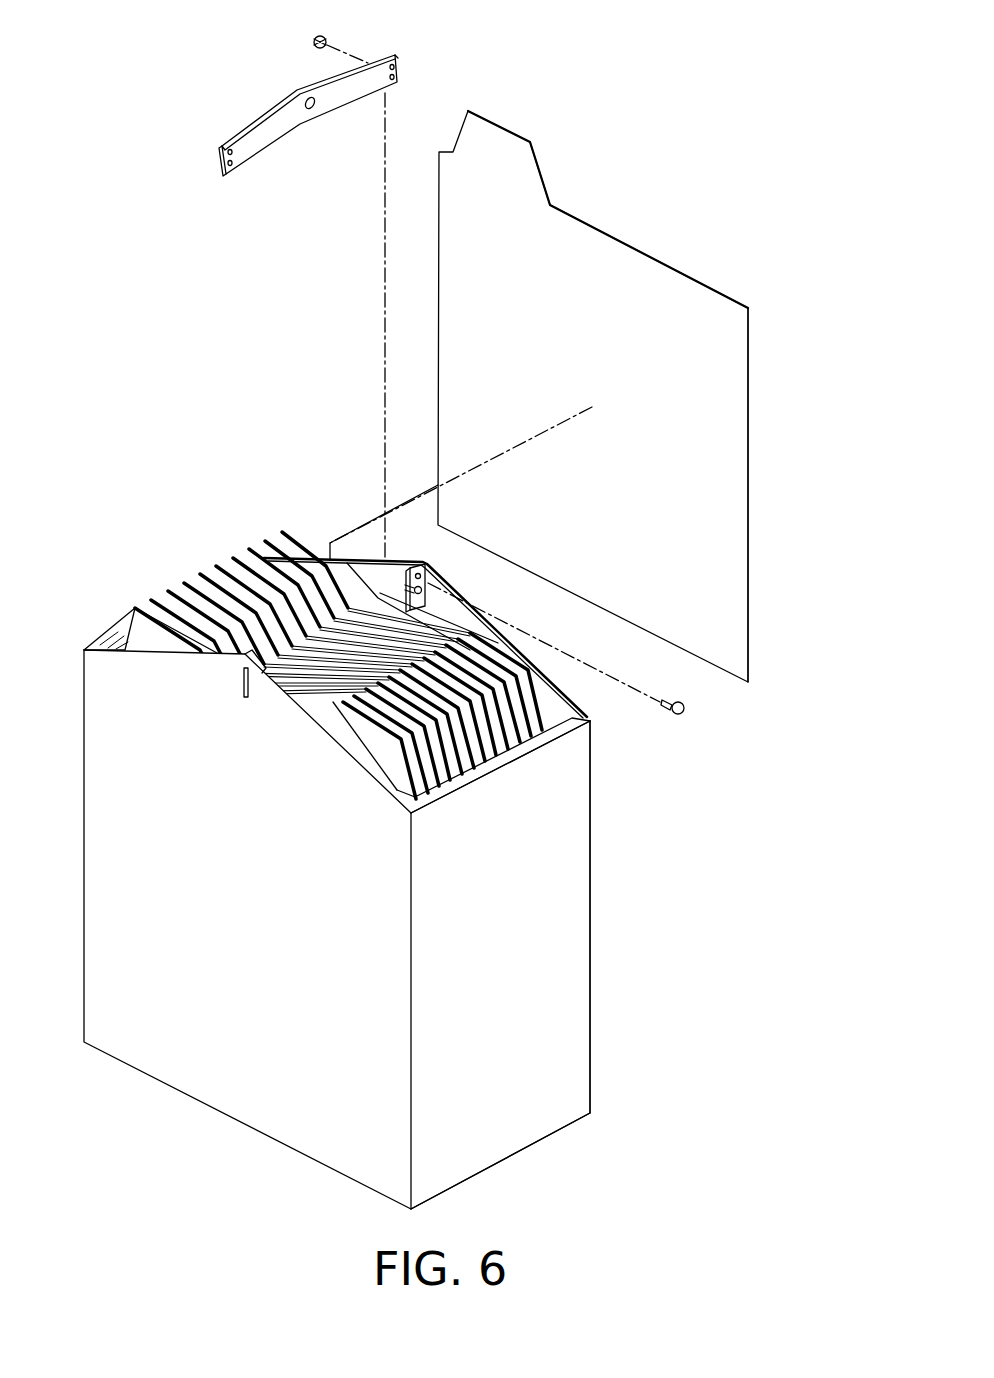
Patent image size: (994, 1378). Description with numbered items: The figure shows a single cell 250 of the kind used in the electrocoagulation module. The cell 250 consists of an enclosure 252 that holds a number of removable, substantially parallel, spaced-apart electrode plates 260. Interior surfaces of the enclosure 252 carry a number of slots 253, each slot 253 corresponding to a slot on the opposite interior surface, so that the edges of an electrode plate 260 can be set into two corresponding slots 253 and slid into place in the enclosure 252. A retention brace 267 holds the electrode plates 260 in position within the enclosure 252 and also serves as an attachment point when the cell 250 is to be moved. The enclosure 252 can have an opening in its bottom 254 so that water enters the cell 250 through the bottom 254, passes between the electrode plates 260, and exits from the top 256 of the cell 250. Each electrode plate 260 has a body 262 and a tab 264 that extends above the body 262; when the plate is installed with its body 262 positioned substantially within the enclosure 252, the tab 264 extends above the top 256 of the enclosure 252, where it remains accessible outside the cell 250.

The cell 250 is at (551, 939).
The enclosure 252 is at (590, 1067).
The slot 253 is at (122, 628).
The bottom 254 is at (528, 1148).
The top 256 is at (597, 728).
The electrode plate 260 is at (646, 384).
The body 262 is at (685, 468).
The tab 264 is at (508, 134).
The retention brace 267 is at (263, 117).